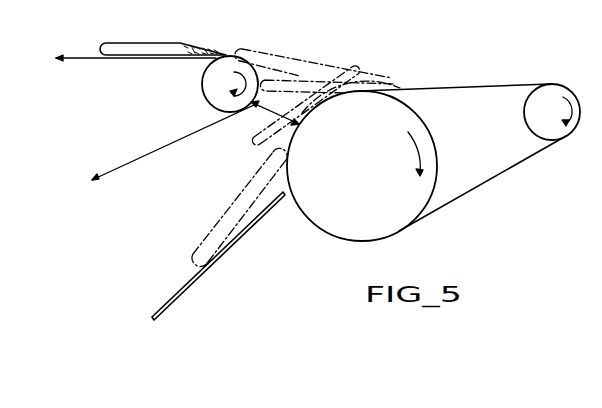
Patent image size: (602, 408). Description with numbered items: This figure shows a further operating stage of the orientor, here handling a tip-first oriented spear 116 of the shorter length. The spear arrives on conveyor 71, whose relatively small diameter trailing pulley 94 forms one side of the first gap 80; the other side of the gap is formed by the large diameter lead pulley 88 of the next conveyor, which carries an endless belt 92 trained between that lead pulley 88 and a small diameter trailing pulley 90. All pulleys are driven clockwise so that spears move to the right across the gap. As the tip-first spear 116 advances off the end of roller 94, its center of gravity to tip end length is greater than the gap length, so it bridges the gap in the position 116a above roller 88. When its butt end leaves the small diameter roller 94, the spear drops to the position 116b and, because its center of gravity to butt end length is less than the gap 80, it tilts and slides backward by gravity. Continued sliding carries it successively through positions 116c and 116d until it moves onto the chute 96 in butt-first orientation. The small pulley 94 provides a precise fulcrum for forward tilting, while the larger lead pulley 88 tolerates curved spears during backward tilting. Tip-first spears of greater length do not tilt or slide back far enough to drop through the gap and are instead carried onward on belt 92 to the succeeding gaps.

The conveyor 71 is at (78, 55).
The tip-first oriented spear 116 is at (138, 42).
The spear position 116a is at (257, 46).
The spear position 116b is at (388, 82).
The spear position 116c is at (356, 64).
The spear position 116d is at (208, 237).
The trailing pulley 94 is at (203, 92).
The first gap 80 is at (275, 113).
The lead pulley 88 is at (437, 131).
The endless belt 92 is at (478, 88).
The trailing pulley 90 is at (531, 134).
The chute 96 is at (208, 267).